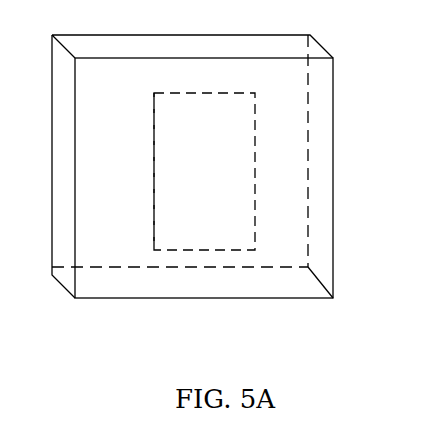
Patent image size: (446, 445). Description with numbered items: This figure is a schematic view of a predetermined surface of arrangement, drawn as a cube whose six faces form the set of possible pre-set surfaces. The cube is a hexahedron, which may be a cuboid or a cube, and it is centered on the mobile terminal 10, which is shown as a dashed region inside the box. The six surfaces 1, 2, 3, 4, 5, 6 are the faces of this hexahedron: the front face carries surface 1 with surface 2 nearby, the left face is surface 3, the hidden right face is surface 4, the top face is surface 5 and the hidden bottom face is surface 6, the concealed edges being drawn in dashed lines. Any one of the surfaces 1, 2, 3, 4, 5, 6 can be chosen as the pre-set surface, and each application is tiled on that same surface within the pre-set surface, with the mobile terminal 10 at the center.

The surface 1 is at (204, 178).
The surface 2 is at (170, 171).
The surface 3 is at (63, 166).
The surface 4 is at (322, 166).
The surface 5 is at (192, 47).
The surface 6 is at (180, 283).
The mobile terminal 10 is at (255, 110).